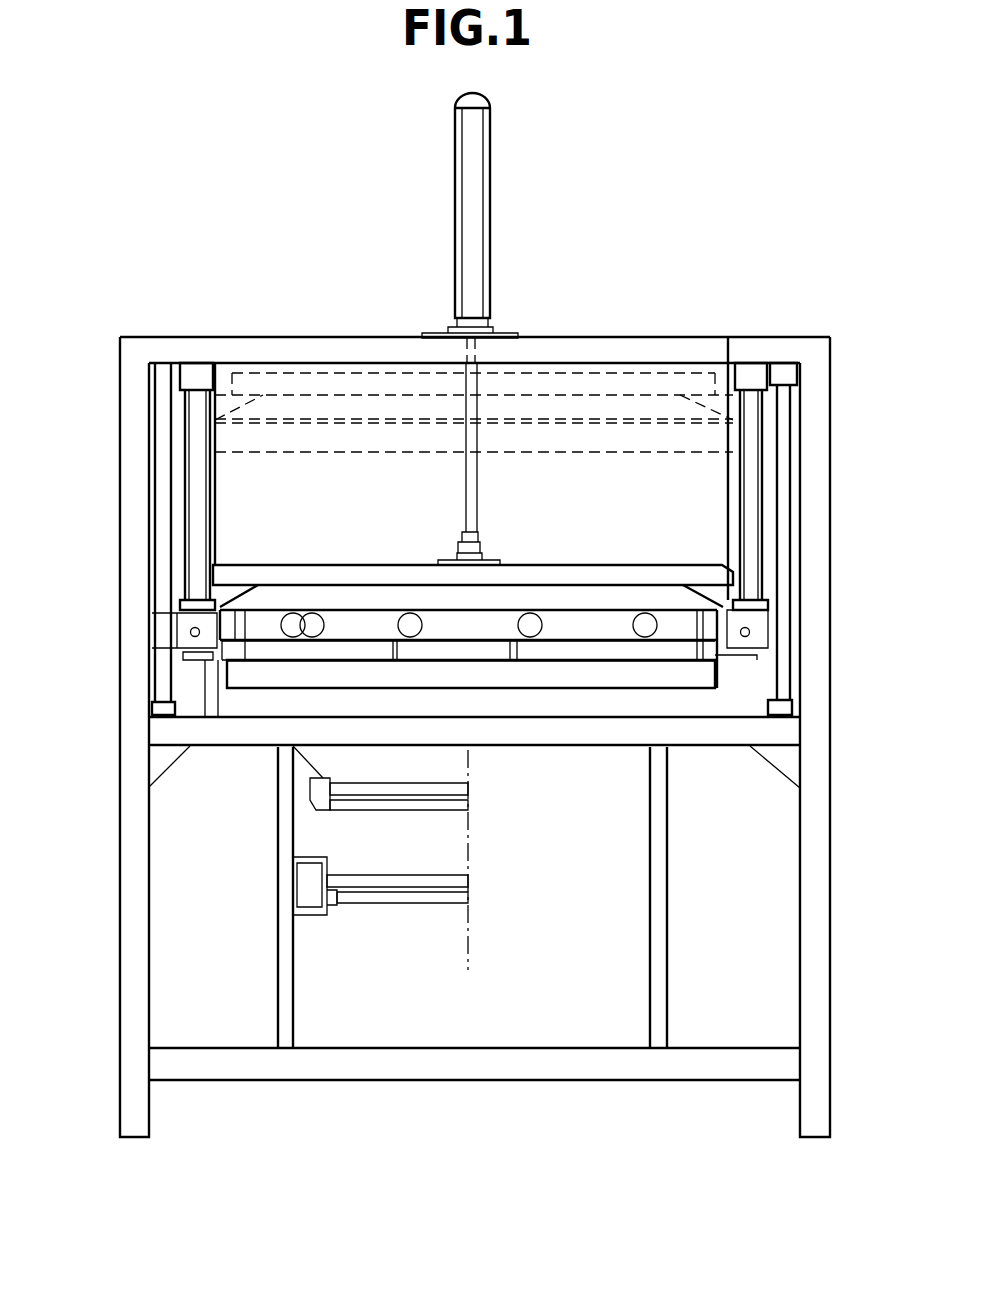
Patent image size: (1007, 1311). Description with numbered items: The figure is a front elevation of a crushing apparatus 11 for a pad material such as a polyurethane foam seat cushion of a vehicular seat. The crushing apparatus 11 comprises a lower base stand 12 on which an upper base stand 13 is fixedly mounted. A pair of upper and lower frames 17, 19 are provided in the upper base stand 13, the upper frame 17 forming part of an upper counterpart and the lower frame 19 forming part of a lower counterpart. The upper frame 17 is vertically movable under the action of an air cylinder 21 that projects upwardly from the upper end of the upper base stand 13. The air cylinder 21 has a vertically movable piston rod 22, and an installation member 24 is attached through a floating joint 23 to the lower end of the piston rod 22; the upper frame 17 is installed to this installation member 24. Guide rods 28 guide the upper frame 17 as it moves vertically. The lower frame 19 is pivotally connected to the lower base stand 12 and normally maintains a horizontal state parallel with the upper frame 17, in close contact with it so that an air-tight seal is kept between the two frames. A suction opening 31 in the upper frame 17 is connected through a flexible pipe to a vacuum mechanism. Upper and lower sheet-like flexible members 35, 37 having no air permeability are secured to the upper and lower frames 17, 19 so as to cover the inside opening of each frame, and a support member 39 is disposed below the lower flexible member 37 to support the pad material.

The crushing apparatus 11 is at (273, 303).
The lower base stand 12 is at (822, 876).
The upper base stand 13 is at (670, 337).
The upper frame 17 is at (327, 437).
The lower frame 19 is at (577, 653).
The air cylinder 21 is at (491, 199).
The piston rod 22 is at (478, 480).
The floating joint 23 is at (460, 550).
The installation member 24 is at (532, 577).
The guide rods 28 is at (163, 497).
The suction opening 31 is at (402, 612).
The upper sheet-like flexible member 35 is at (473, 645).
The lower sheet-like flexible member 37 is at (545, 662).
The support member 39 is at (275, 688).